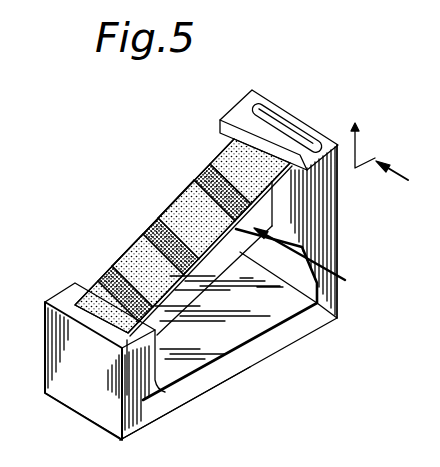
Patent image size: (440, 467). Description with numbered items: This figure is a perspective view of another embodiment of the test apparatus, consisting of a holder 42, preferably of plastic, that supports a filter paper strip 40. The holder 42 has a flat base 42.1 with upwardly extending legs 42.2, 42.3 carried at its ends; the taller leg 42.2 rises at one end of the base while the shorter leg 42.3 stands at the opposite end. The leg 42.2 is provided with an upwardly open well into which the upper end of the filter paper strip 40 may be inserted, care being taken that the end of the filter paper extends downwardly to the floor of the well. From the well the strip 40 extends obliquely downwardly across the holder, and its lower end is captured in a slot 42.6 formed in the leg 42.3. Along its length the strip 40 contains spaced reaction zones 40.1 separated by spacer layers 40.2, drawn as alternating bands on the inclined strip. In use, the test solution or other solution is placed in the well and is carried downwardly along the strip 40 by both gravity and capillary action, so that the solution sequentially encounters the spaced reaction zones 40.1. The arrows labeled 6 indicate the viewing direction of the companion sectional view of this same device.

The viewing direction arrow 6 is at (343, 220).
The filter paper strip 40 is at (195, 215).
The reaction zones 40.1 is at (170, 242).
The spacer layers 40.2 is at (212, 190).
The holder 42 is at (252, 363).
The flat base 42.1 is at (198, 392).
The leg 42.2 is at (337, 237).
The leg 42.3 is at (86, 413).
The slot 42.6 is at (50, 301).